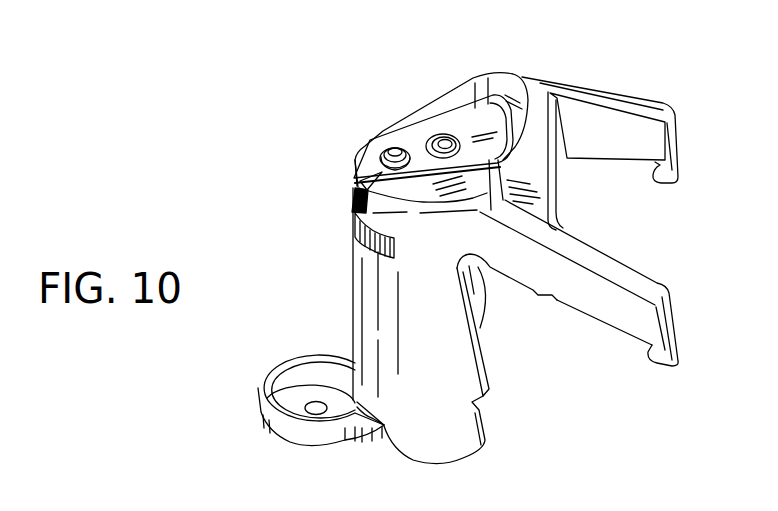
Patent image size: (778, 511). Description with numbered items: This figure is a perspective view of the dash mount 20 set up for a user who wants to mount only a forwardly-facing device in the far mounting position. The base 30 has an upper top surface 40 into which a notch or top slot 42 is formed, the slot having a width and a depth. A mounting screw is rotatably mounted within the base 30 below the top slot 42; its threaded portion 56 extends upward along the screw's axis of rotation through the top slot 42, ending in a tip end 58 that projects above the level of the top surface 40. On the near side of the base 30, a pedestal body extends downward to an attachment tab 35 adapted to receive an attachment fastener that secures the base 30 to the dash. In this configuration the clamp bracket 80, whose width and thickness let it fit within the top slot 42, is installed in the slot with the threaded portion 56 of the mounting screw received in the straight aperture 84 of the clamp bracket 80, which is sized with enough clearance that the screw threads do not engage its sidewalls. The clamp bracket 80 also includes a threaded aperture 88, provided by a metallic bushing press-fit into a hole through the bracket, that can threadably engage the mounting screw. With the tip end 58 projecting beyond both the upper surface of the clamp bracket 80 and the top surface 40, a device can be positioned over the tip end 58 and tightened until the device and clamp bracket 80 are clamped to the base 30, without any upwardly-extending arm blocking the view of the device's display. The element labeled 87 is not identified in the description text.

The dash mount 20 is at (654, 45).
The base 30 is at (486, 364).
The attachment tab 35 is at (257, 414).
The top surface 40 is at (448, 105).
The top slot 42 is at (520, 80).
The threaded portion 56 is at (357, 195).
The tip end 58 is at (393, 150).
The clamp bracket 80 is at (357, 156).
The straight aperture 84 is at (360, 176).
The mounting plate 87 is at (470, 127).
The threaded aperture 88 is at (436, 136).